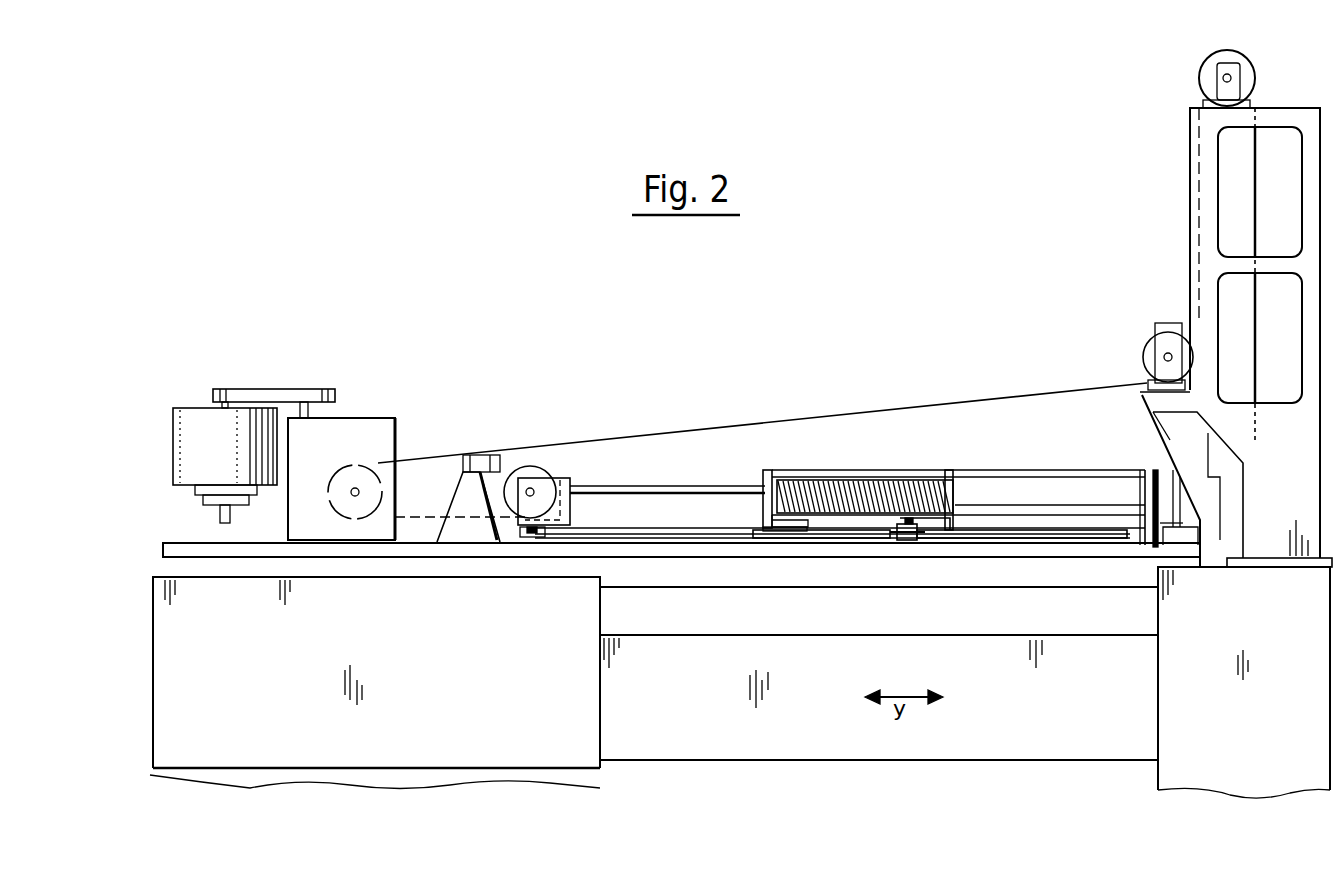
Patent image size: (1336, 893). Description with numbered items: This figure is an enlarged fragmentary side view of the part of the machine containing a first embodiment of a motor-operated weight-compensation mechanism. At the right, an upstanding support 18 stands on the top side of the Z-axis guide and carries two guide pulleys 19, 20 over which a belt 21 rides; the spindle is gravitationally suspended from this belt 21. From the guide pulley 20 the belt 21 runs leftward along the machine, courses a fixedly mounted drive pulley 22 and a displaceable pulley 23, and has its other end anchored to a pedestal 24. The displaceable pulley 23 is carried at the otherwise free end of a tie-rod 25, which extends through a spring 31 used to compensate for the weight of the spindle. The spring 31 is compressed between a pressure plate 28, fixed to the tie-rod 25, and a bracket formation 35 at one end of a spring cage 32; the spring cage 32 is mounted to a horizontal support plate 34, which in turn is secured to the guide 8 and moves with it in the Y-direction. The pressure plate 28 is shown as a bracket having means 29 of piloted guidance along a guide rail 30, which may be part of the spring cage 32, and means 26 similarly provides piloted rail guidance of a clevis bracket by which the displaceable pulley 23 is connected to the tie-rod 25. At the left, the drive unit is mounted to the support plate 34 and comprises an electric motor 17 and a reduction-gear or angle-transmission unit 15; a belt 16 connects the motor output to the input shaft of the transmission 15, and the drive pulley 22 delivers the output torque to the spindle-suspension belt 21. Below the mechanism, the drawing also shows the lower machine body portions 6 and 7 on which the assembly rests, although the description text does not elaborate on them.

The machine base 6 is at (580, 750).
The bed section 7 is at (792, 733).
The guide 8 is at (1177, 765).
The reduction-gear or angle-transmission unit 15 is at (357, 430).
The belt 16 is at (267, 389).
The electric motor 17 is at (196, 420).
The upstanding support 18 is at (1205, 193).
The guide pulley 19 is at (1208, 88).
The guide pulley 20 is at (1143, 348).
The belt 21 is at (950, 405).
The drive pulley 22 is at (380, 463).
The displaceable pulley 23 is at (555, 487).
The pedestal 24 is at (455, 480).
The tie-rod 25 is at (640, 490).
The means providing piloted rail guidance 26 is at (530, 538).
The pressure plate 28 is at (953, 490).
The means of piloted guidance 29 is at (910, 540).
The guide rail 30 is at (988, 538).
The spring 31 is at (835, 482).
The spring cage 32 is at (1050, 470).
The horizontal support plate 34 is at (790, 553).
The bracket formation 35 is at (770, 473).